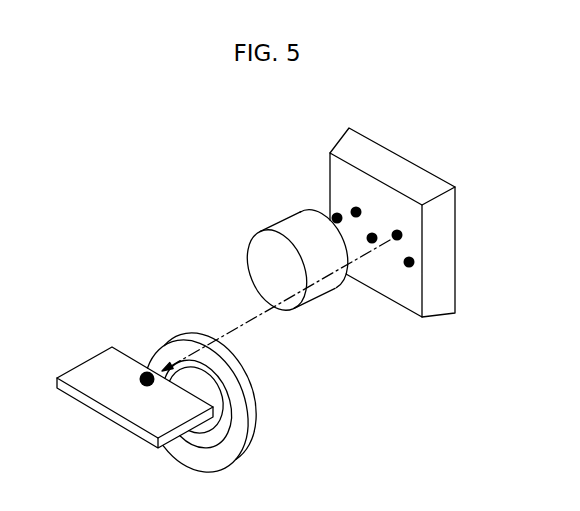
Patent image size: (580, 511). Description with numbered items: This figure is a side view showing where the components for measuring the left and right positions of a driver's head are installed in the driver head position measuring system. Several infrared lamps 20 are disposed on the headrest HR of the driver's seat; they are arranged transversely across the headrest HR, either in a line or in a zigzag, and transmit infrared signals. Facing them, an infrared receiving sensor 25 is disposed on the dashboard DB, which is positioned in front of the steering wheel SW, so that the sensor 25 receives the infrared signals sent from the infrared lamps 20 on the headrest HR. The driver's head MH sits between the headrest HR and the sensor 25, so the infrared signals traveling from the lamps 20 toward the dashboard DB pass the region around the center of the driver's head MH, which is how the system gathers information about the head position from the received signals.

The infrared lamps 20 is at (409, 256).
The infrared receiving sensor 25 is at (145, 371).
The headrest HR is at (448, 231).
The driver's head MH is at (282, 222).
The steering wheel SW is at (257, 415).
The dashboard DB is at (84, 399).